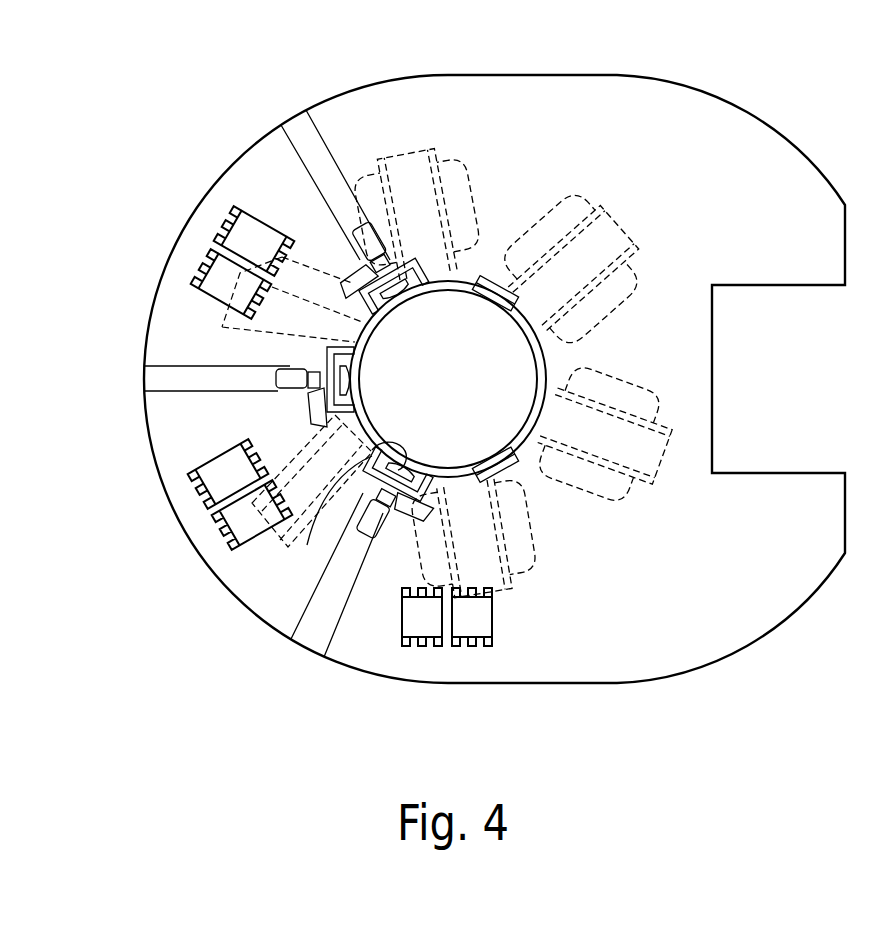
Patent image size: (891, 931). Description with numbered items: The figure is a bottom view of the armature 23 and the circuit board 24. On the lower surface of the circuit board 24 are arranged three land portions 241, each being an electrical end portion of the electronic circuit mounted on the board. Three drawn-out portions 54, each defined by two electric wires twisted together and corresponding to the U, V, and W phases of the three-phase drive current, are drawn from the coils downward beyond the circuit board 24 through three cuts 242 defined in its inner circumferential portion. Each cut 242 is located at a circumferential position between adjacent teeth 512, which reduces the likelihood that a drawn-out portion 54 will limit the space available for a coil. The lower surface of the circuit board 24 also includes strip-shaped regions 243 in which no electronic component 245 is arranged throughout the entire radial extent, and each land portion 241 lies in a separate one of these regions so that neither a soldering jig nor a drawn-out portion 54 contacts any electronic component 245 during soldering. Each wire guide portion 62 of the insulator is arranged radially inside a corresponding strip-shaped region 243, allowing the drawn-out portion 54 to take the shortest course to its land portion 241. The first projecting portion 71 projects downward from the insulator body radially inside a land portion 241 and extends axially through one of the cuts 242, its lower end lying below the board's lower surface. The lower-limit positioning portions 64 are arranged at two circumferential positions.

The armature 23 is at (608, 203).
The circuit board 24 is at (727, 180).
The drawn-out portion 54 is at (413, 262).
The wire guide portion 62 is at (395, 302).
The lower-limit positioning portion 64 is at (493, 455).
The first projecting portion 71 is at (400, 452).
The land portion 241 is at (380, 253).
The cut 242 is at (363, 274).
The strip-shaped region 243 is at (316, 148).
The electronic component 245 is at (476, 616).
The tooth 512 is at (663, 453).